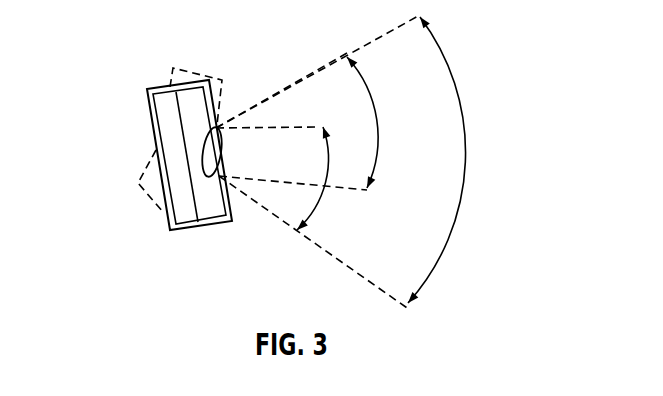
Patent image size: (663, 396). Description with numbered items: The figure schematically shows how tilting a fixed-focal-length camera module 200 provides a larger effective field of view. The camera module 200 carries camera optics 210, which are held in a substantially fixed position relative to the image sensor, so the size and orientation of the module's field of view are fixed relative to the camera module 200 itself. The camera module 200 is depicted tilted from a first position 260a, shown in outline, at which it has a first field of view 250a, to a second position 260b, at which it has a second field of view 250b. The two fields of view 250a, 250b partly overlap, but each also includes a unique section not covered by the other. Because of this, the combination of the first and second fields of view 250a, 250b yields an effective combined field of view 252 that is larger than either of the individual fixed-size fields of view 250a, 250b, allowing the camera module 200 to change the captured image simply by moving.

The camera module 200 is at (194, 42).
The camera optics 210 is at (220, 145).
The first field of view 250a is at (323, 178).
The second field of view 250b is at (377, 123).
The effective combined field of view 252 is at (470, 152).
The first position 260a is at (138, 183).
The second position 260b is at (148, 107).